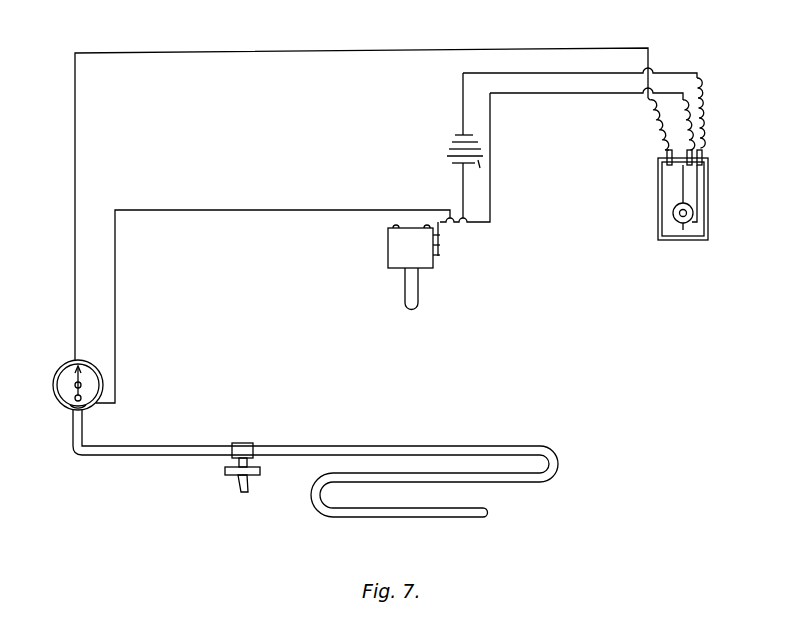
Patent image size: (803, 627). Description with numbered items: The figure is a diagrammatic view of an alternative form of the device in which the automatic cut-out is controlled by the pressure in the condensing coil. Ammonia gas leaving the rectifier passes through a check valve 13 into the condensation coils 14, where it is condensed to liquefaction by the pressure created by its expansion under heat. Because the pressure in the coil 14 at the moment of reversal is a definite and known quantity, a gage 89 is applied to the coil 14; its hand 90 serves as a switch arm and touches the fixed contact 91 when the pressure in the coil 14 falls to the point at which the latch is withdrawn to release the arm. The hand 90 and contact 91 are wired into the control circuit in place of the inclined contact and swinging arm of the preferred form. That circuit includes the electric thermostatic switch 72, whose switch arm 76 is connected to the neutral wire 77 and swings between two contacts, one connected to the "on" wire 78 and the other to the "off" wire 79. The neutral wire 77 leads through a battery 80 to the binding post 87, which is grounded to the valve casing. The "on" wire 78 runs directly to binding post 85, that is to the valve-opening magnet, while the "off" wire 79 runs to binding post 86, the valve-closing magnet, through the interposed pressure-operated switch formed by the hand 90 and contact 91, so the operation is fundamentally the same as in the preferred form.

The "off" wire 79 is at (226, 51).
The battery 80 is at (458, 147).
The neutral wire 77 is at (704, 137).
The "on" wire 78 is at (686, 115).
The electric thermostatic switch 72 is at (706, 241).
The switch arm 76 is at (684, 195).
The binding post 85 is at (436, 238).
The binding post 86 is at (441, 252).
The binding post 87 is at (441, 258).
The gage 89 is at (64, 401).
The hand 90 is at (75, 375).
The fixed contact 91 is at (91, 406).
The condensation coils 14 is at (315, 463).
The check valve 13 is at (255, 476).